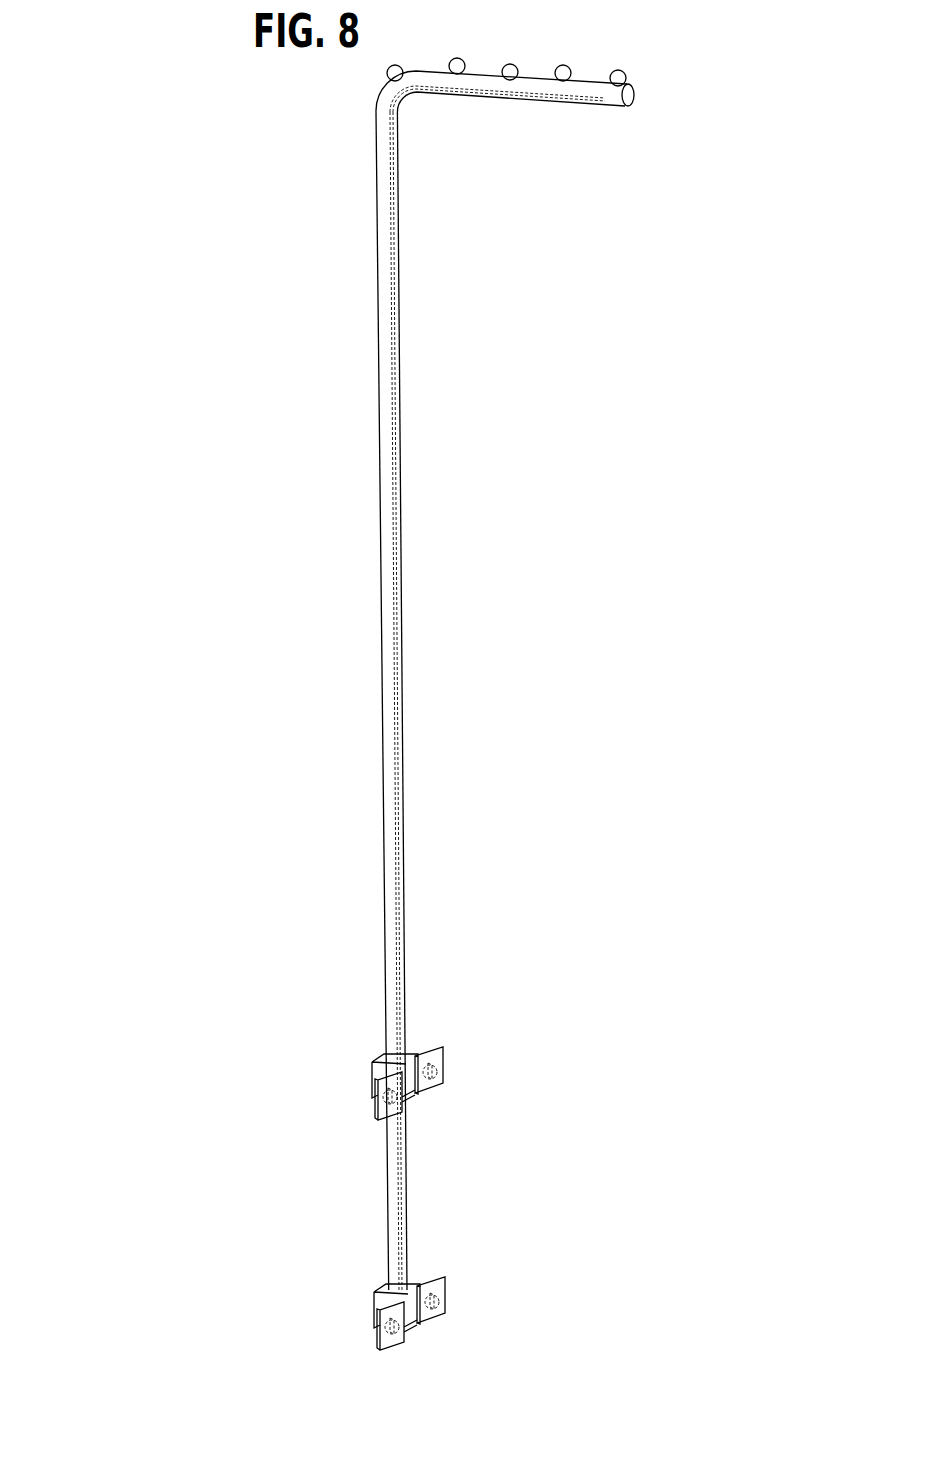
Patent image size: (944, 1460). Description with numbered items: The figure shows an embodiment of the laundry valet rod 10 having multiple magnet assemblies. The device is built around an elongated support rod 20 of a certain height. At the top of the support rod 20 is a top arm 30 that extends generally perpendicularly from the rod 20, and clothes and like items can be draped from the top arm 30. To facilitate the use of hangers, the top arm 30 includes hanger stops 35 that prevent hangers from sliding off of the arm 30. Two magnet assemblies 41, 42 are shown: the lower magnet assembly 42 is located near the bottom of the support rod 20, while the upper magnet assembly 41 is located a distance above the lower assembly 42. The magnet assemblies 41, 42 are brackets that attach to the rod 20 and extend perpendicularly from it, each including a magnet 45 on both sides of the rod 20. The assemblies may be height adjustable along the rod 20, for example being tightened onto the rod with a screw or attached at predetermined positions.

The laundry valet rod 10 is at (236, 207).
The support rod 20 is at (380, 503).
The top arm 30 is at (488, 88).
The hanger stops 35 is at (569, 66).
The upper magnet assembly 41 is at (372, 1068).
The lower magnet assembly 42 is at (373, 1303).
The magnet 45 is at (443, 1073).